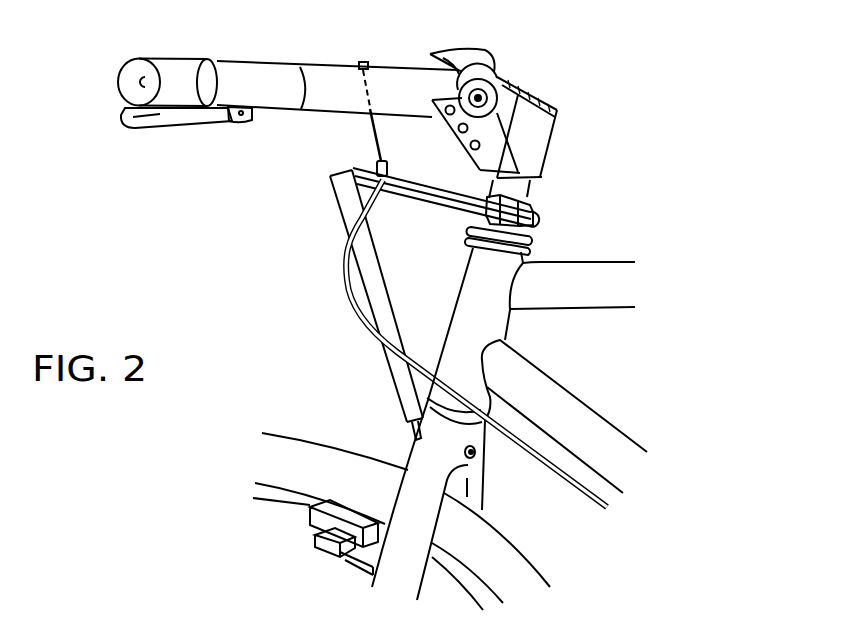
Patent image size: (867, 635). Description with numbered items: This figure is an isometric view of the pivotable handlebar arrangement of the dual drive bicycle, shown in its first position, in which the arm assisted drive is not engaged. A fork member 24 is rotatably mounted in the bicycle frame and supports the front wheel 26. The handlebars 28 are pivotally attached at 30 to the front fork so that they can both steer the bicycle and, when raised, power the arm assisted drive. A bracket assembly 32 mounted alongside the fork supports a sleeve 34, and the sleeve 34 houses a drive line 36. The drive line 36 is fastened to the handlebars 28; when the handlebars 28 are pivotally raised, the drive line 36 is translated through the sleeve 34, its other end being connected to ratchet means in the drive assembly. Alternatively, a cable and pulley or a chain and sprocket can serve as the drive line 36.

The fork member 24 is at (412, 458).
The front wheel 26 is at (277, 497).
The handlebars 28 is at (333, 72).
The pivotal attachment 30 is at (517, 82).
The bracket assembly 32 is at (322, 203).
The sleeve 34 is at (345, 282).
The drive line 36 is at (377, 138).